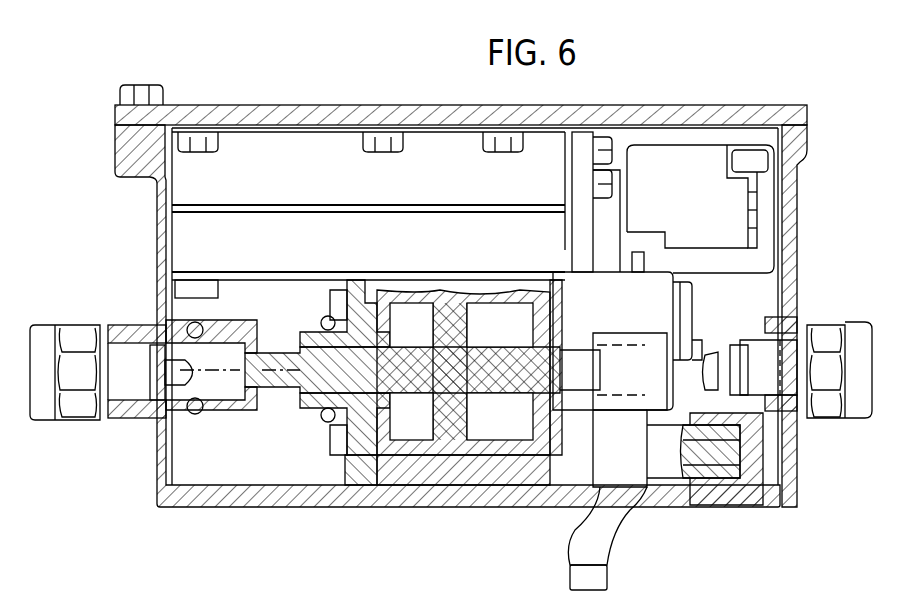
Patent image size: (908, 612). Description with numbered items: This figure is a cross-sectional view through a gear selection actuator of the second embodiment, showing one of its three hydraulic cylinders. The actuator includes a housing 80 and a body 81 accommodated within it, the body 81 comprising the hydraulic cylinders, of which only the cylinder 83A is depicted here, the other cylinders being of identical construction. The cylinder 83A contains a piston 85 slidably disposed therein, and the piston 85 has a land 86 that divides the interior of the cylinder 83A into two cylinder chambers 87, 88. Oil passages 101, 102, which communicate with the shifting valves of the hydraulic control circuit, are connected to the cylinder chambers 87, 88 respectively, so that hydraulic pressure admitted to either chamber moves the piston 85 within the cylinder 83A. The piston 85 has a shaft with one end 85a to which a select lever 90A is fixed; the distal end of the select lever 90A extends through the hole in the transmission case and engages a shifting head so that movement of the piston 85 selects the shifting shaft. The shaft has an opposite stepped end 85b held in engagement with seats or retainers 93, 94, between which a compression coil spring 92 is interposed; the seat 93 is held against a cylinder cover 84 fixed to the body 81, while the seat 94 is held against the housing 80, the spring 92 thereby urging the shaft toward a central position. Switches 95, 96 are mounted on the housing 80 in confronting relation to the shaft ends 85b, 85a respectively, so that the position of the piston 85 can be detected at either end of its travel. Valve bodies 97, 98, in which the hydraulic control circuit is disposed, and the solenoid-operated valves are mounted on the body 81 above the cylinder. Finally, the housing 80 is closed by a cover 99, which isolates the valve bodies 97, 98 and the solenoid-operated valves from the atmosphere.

The housing 80 is at (208, 500).
The body 81 is at (455, 470).
The hydraulic cylinder 83A is at (355, 442).
The cylinder cover 84 is at (352, 282).
The piston 85 is at (340, 450).
The shaft end 85a is at (680, 355).
The stepped end 85b is at (165, 412).
The land 86 is at (396, 455).
The cylinder chamber 87 is at (417, 430).
The cylinder chamber 88 is at (500, 430).
The select lever 90A is at (630, 540).
The compression coil spring 92 is at (277, 415).
The seat 93 is at (230, 410).
The seat 94 is at (322, 410).
The switch 95 is at (160, 365).
The switch 96 is at (770, 360).
The valve body 97 is at (455, 241).
The valve body 98 is at (455, 180).
The cover 99 is at (340, 105).
The oil passage 101 is at (385, 300).
The oil passage 102 is at (522, 296).